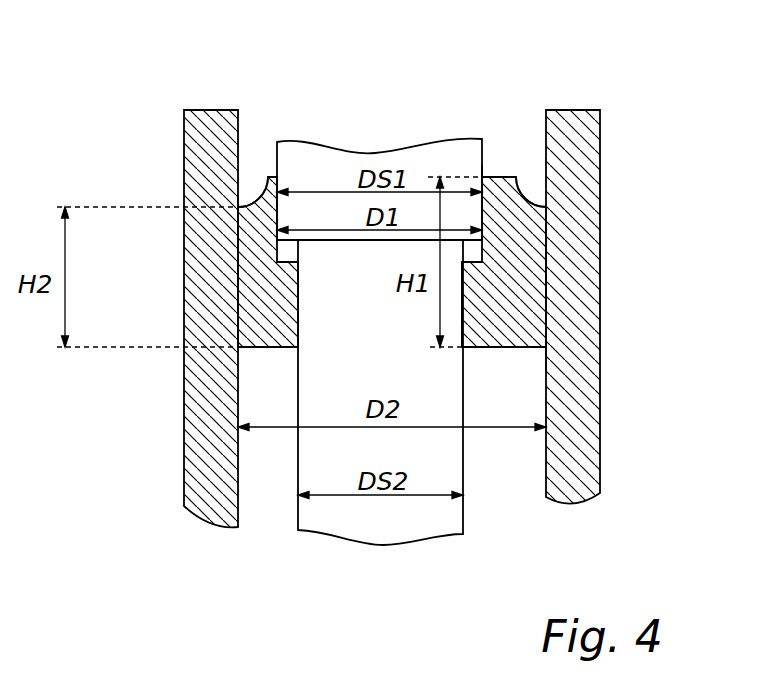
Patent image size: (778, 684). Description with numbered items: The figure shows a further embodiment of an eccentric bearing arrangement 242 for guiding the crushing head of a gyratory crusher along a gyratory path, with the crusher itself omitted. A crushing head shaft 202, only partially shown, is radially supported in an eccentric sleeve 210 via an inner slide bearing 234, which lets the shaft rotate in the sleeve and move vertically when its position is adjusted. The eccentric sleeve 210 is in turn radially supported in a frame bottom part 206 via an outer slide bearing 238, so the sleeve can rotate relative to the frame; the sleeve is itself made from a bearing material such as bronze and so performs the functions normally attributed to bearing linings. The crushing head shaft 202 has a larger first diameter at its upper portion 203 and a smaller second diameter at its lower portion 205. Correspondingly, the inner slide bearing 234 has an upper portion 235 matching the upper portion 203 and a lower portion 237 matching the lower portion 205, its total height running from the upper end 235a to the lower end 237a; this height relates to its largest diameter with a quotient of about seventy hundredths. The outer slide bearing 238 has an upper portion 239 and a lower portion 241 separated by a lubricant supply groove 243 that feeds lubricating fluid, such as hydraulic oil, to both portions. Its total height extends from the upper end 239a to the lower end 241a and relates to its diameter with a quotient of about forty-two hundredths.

The crushing head shaft 202 is at (486, 491).
The upper portion of the crushing head shaft 203 is at (433, 158).
The lower portion of the crushing head shaft 205 is at (420, 505).
The frame bottom part 206 is at (193, 471).
The eccentric sleeve 210 is at (530, 276).
The inner slide bearing 234 is at (240, 208).
The upper portion of the inner slide bearing 235 is at (263, 226).
The upper end of the upper portion 235a is at (483, 172).
The lower portion of the inner slide bearing 237 is at (242, 310).
The lower end of the lower portion 237a is at (462, 348).
The outer slide bearing 238 is at (556, 253).
The upper portion of the outer slide bearing 239 is at (547, 226).
The upper end of the upper portion 239a is at (547, 198).
The lower portion of the outer slide bearing 241 is at (547, 324).
The lower end of the lower portion 241a is at (548, 362).
The eccentric bearing arrangement 242 is at (502, 158).
The lubricant supply groove 243 is at (549, 313).